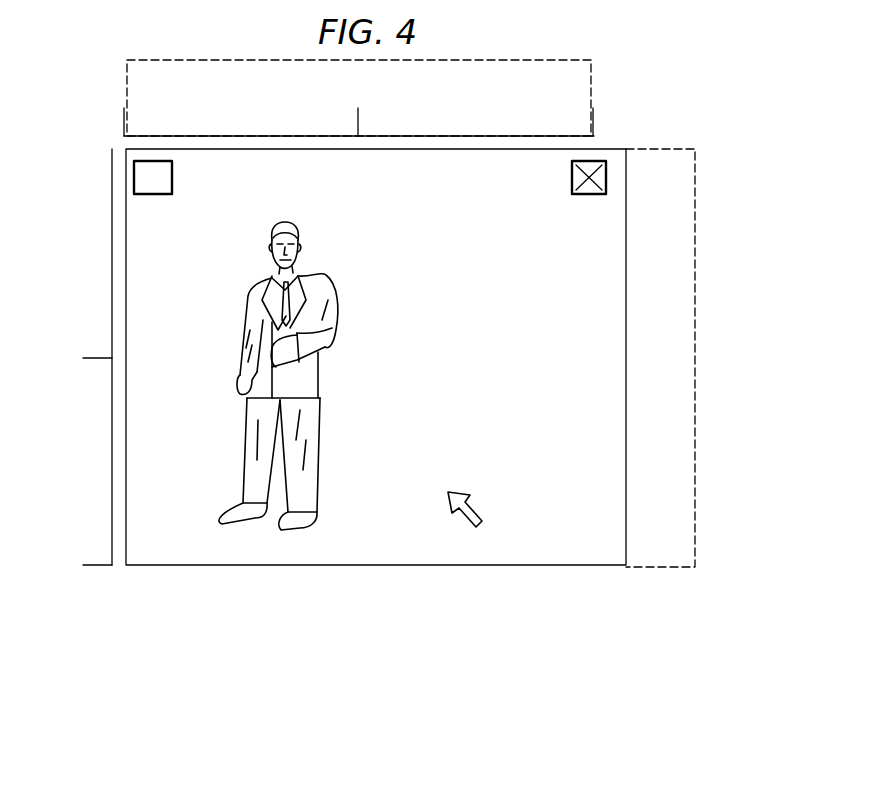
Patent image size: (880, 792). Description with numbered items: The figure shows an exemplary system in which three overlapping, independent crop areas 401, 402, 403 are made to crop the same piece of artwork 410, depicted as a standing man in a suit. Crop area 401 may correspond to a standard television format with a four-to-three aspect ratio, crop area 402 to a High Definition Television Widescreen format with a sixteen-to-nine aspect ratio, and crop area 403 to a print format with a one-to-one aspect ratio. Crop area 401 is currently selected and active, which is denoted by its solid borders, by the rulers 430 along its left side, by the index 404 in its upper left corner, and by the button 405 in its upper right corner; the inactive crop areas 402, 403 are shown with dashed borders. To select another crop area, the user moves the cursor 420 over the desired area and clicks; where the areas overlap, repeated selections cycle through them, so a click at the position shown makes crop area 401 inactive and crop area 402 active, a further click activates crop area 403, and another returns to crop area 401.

The crop area 401 is at (233, 568).
The crop area 402 is at (695, 395).
The crop area 403 is at (590, 69).
The index 404 is at (172, 172).
The button 405 is at (572, 172).
The artwork 410 is at (325, 275).
The cursor 420 is at (470, 499).
The rulers 430 is at (112, 427).